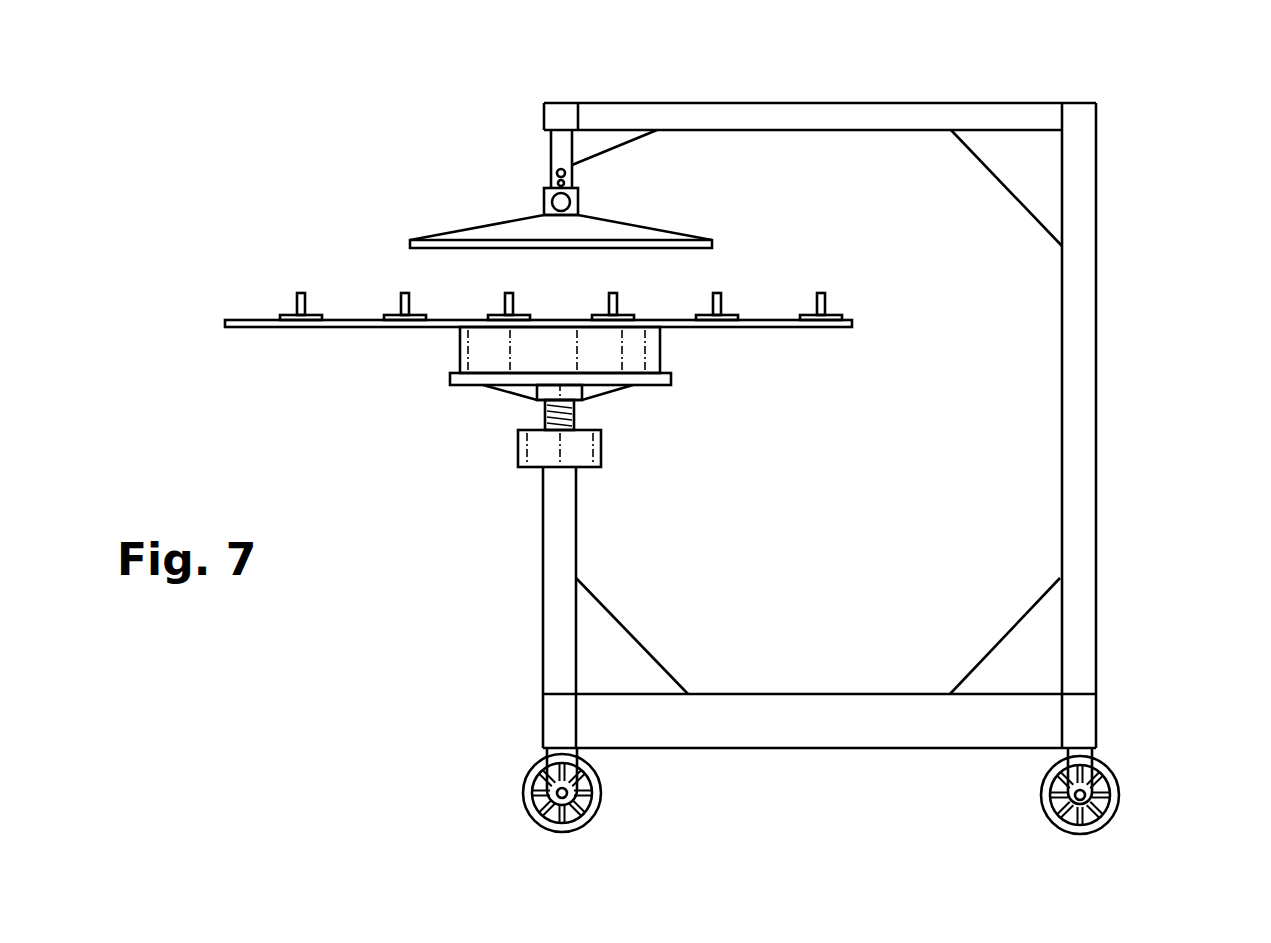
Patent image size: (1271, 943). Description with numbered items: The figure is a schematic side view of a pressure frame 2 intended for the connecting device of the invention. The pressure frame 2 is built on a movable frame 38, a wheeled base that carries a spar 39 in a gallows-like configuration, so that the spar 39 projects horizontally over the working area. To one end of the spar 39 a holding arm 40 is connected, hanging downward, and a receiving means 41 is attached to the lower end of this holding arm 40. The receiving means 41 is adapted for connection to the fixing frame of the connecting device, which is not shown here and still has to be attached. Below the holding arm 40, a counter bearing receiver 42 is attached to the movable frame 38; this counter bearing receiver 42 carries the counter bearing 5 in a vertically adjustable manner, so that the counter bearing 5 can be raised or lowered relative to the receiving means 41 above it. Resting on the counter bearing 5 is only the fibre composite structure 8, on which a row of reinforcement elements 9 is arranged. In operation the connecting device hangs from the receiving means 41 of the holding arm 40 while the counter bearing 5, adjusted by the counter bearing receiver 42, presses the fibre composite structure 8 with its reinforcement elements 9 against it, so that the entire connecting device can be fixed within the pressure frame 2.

The pressure frame 2 is at (1194, 165).
The counter bearing 5 is at (650, 350).
The fibre composite structure 8 is at (308, 327).
The reinforcement elements 9 is at (297, 305).
The movable frame 38 is at (816, 730).
The spar 39 is at (806, 115).
The holding arm 40 is at (560, 153).
The receiving means 41 is at (500, 235).
The counter bearing receiver 42 is at (590, 446).